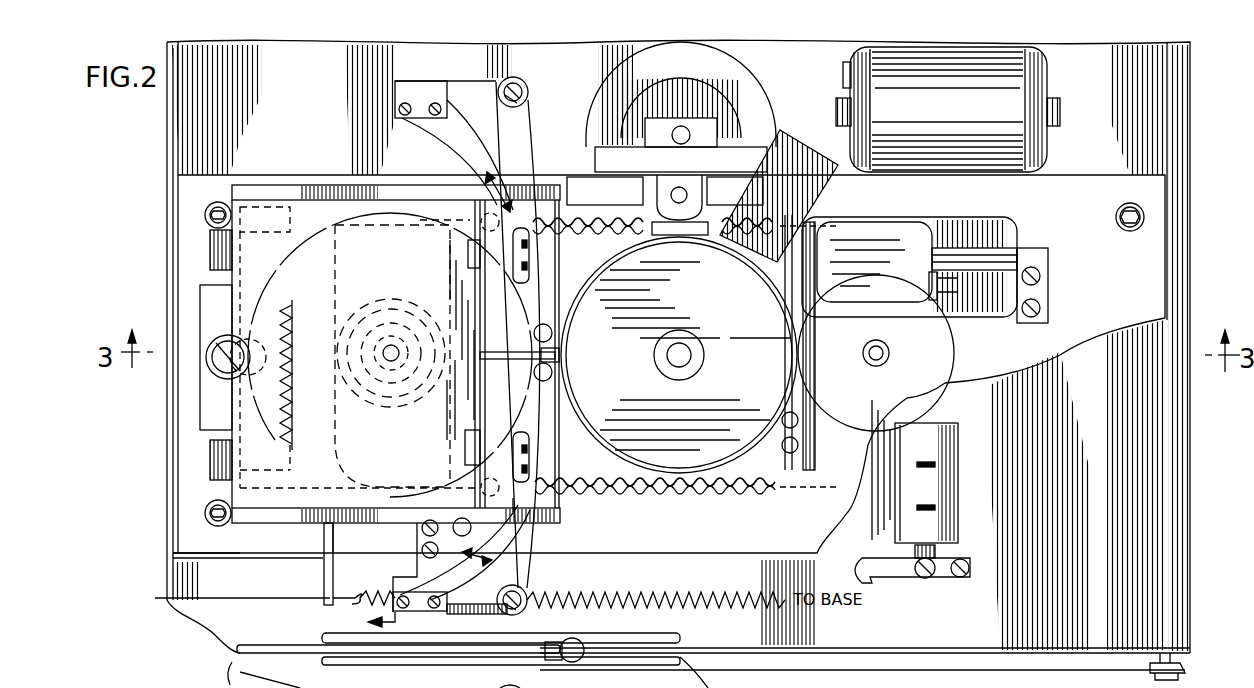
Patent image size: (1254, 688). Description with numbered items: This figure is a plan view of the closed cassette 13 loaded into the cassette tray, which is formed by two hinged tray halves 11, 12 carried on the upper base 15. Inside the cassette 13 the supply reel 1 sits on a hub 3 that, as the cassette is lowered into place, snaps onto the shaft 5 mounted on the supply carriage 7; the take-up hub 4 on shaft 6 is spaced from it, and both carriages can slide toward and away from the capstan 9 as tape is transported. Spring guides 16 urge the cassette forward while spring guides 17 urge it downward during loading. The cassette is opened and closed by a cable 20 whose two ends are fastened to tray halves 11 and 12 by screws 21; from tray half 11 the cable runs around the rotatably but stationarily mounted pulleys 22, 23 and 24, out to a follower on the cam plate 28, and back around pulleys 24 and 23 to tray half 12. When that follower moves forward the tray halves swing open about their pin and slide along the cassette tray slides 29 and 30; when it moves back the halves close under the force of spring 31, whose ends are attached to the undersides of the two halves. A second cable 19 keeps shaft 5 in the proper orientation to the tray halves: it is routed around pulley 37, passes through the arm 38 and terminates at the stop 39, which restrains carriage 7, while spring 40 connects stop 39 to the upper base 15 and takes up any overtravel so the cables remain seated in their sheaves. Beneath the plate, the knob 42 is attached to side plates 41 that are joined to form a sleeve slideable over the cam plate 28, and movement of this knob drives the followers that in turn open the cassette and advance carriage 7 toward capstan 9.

The supply reel 1 is at (278, 266).
The hub 3 is at (380, 308).
The hub 4 is at (853, 278).
The shaft 5 is at (388, 347).
The shaft 6 is at (886, 344).
The carriage 7 is at (333, 455).
The capstan 9 is at (753, 361).
The cassette tray half 11 is at (339, 185).
The cassette tray half 12 is at (396, 523).
The cassette 13 is at (232, 298).
The upper base 15 is at (1086, 484).
The spring guide 16 is at (210, 242).
The spring guide 17 is at (468, 252).
The cable 19 is at (198, 605).
The cable 20 is at (530, 417).
The screw 21 is at (552, 370).
The pulley 22 is at (525, 82).
The pulley 23 is at (526, 592).
The pulley 24 is at (312, 619).
The cam plate 28 is at (718, 650).
The cassette tray slide 29 is at (452, 148).
The cassette tray slide 30 is at (470, 568).
The spring 31 is at (293, 308).
The pulley 37 is at (180, 596).
The arm 38 is at (324, 588).
The stop 39 is at (350, 594).
The spring 40 is at (628, 602).
The side plate 41 is at (707, 672).
The knob 42 is at (573, 648).